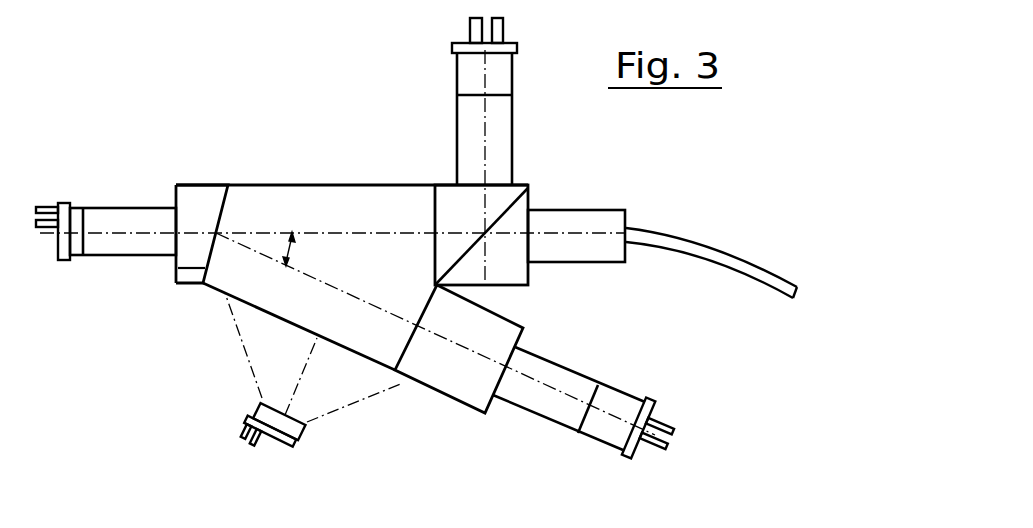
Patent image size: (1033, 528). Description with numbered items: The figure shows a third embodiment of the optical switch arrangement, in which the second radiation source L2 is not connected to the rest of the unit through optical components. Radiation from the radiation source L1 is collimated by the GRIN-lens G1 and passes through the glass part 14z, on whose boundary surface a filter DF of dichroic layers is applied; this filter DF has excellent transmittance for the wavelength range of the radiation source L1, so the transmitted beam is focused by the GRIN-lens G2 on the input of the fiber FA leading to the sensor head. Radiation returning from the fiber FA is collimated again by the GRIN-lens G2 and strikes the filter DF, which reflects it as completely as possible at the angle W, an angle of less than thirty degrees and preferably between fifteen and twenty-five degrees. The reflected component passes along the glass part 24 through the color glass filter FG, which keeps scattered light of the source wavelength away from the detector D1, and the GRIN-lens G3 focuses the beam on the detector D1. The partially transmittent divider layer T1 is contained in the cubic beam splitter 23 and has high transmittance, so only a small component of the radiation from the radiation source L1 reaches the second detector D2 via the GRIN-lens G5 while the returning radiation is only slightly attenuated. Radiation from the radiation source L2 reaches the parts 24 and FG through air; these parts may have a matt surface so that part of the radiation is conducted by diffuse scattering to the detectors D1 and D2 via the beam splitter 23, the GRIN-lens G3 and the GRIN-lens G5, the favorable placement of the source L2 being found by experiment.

The radiation source L1 is at (77, 212).
The optical component for collimating G1 is at (137, 217).
The glass part 14z is at (202, 200).
The filter DF is at (176, 269).
The angle W is at (293, 250).
The cubic beam splitter 23 is at (448, 202).
The partially transmittent divider layer T1 is at (513, 207).
The second detector D2 is at (460, 72).
The GRIN-lens G5 is at (457, 127).
The GRIN-lens G2 is at (580, 245).
The fiber FA is at (718, 250).
The glass part 24 is at (237, 283).
The second radiation source L2 is at (307, 427).
The color glass filter FG is at (458, 377).
The GRIN-lens G3 is at (548, 400).
The detector D1 is at (607, 432).